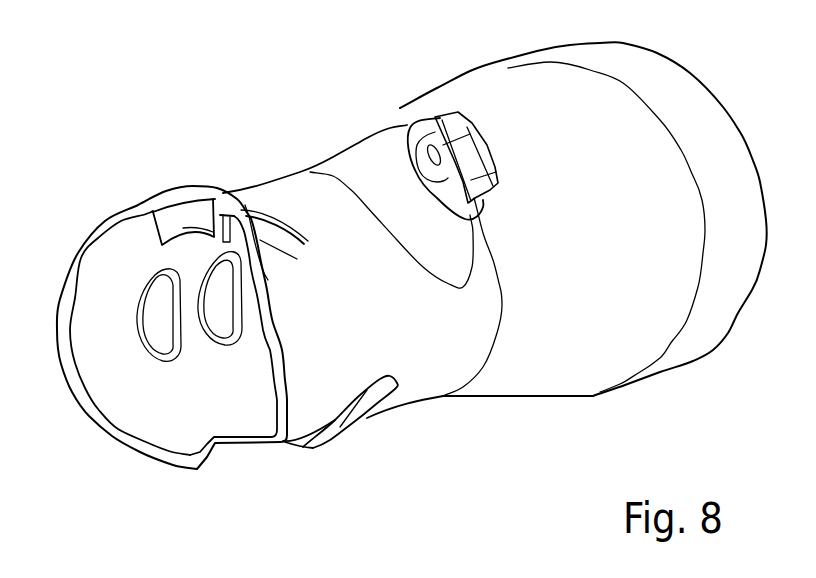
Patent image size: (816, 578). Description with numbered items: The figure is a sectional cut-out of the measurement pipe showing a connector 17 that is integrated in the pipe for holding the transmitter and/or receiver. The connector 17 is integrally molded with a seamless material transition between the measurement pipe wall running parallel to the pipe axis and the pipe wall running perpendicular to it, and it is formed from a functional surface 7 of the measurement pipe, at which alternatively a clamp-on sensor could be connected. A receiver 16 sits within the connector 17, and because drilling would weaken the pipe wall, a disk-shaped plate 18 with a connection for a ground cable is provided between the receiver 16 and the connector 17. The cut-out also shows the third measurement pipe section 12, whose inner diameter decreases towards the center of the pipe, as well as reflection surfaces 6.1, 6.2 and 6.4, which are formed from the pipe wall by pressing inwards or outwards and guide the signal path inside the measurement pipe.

The reflection surface 6.1 is at (245, 437).
The reflection surface 6.2 is at (270, 227).
The reflection surface 6.4 is at (340, 428).
The functional surface 7 is at (225, 200).
The third measurement pipe section 12 is at (700, 345).
The receiver 16 is at (449, 128).
The connector 17 is at (172, 214).
The disk-shaped plate 18 is at (425, 133).